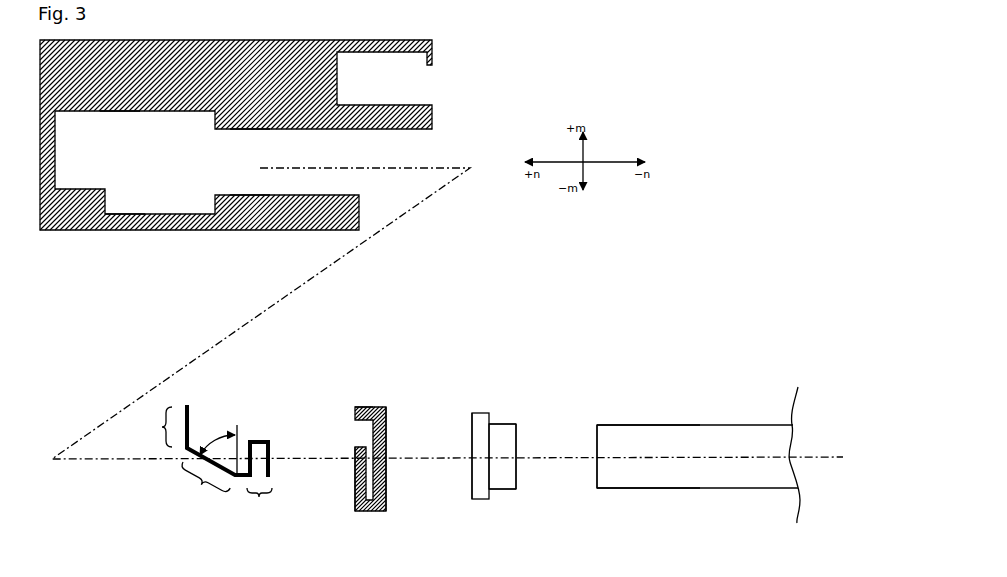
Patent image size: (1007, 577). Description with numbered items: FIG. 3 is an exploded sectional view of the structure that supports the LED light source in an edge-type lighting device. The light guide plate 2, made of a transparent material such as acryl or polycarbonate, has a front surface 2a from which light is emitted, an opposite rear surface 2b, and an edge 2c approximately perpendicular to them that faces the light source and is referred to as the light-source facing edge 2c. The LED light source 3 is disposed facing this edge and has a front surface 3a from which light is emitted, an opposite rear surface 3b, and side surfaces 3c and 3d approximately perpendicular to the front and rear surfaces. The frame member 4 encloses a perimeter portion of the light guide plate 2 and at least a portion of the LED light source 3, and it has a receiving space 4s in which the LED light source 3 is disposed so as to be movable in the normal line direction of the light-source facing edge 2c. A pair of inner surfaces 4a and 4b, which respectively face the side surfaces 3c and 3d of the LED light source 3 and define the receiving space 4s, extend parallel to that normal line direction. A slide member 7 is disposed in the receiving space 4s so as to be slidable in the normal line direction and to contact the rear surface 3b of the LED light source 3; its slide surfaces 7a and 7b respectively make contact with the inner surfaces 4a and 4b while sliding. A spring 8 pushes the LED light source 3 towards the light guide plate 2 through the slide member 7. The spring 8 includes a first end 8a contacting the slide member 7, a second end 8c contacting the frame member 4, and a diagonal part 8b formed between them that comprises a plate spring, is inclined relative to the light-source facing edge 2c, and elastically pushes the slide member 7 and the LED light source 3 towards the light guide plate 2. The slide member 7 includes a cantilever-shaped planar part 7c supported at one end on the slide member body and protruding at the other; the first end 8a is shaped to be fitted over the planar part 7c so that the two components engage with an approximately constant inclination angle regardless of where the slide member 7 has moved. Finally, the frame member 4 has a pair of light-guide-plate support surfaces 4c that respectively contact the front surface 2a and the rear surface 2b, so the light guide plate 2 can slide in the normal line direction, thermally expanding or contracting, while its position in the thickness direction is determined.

The light guide plate 2 is at (684, 418).
The front surface 2a is at (612, 489).
The rear surface 2b is at (612, 424).
The light-source facing edge 2c is at (597, 477).
The LED light source 3 is at (517, 352).
The front surface 3a is at (516, 452).
The rear surface 3b is at (472, 471).
The side surface 3c is at (490, 489).
The side surface 3d is at (494, 424).
The frame member 4 is at (426, 130).
The inner surface 4a is at (122, 213).
The inner surface 4b is at (122, 111).
The light-guide-plate support surfaces 4c is at (249, 129).
The receiving space 4s is at (121, 166).
The slide member 7 is at (413, 352).
The slide surface 7a is at (386, 512).
The slide surface 7b is at (375, 407).
The planar part 7c is at (354, 460).
The spring 8 is at (240, 405).
The first end 8a is at (259, 504).
The diagonal part 8b is at (204, 480).
The second end 8c is at (155, 427).